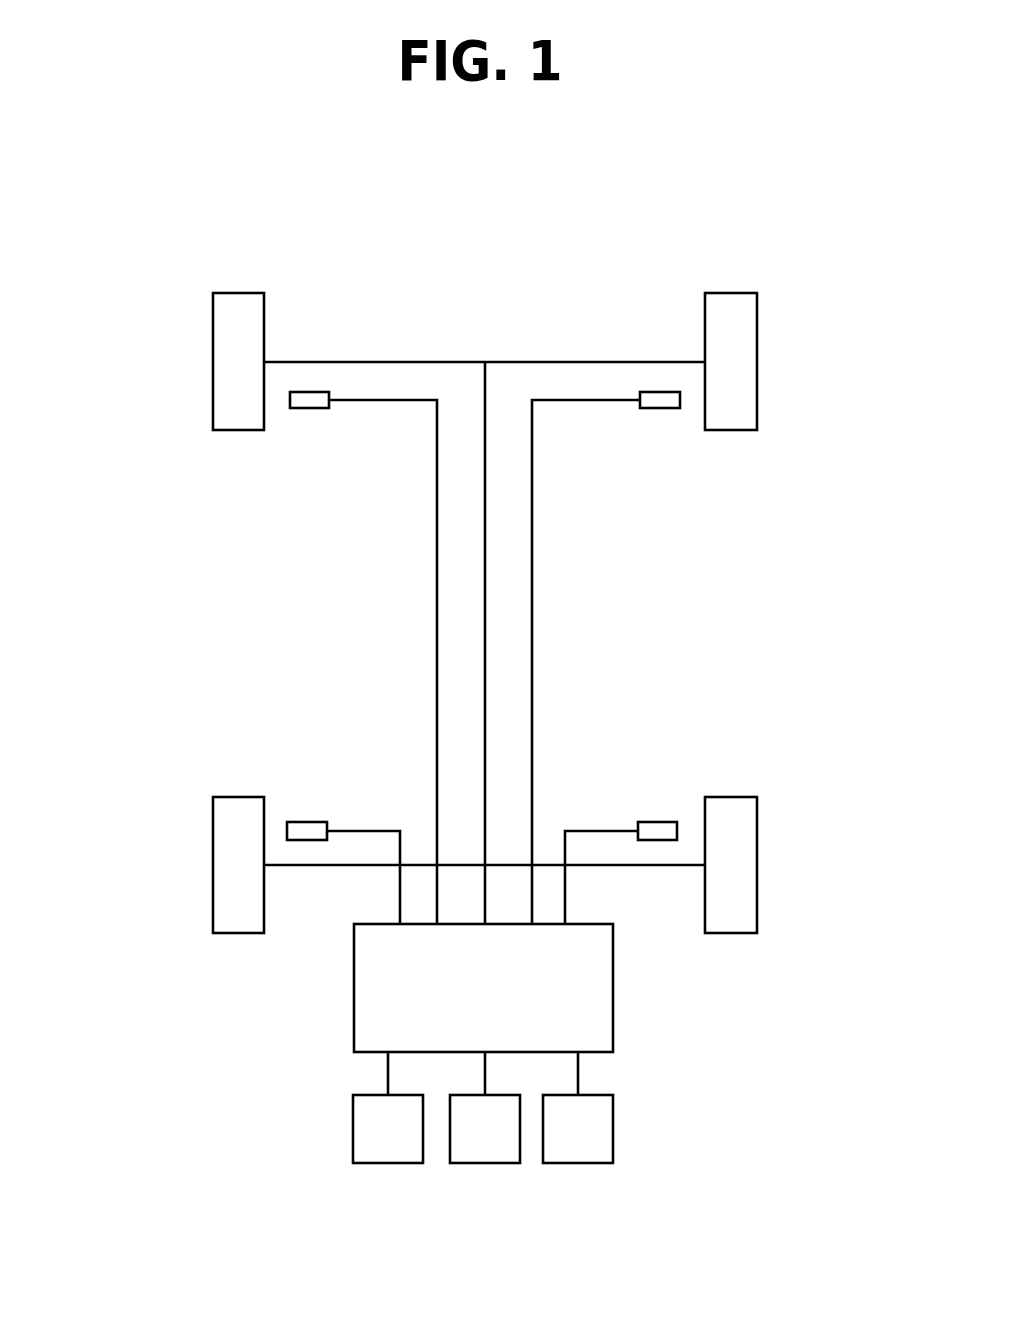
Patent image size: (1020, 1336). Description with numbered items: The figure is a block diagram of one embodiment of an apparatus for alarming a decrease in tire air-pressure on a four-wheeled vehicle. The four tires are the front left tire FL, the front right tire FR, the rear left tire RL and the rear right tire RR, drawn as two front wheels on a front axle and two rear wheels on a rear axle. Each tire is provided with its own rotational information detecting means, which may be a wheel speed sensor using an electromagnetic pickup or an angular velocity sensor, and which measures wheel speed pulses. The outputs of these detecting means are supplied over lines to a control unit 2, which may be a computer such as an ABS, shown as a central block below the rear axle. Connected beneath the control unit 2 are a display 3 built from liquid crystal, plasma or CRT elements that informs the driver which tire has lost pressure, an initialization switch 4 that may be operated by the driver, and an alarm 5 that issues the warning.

The control unit 2 is at (604, 1018).
The display 3 is at (390, 1148).
The initialization switch 4 is at (487, 1148).
The alarm 5 is at (580, 1148).
The front left tire FL is at (226, 332).
The front right tire FR is at (740, 337).
The rear left tire RL is at (226, 847).
The rear right tire RR is at (740, 852).